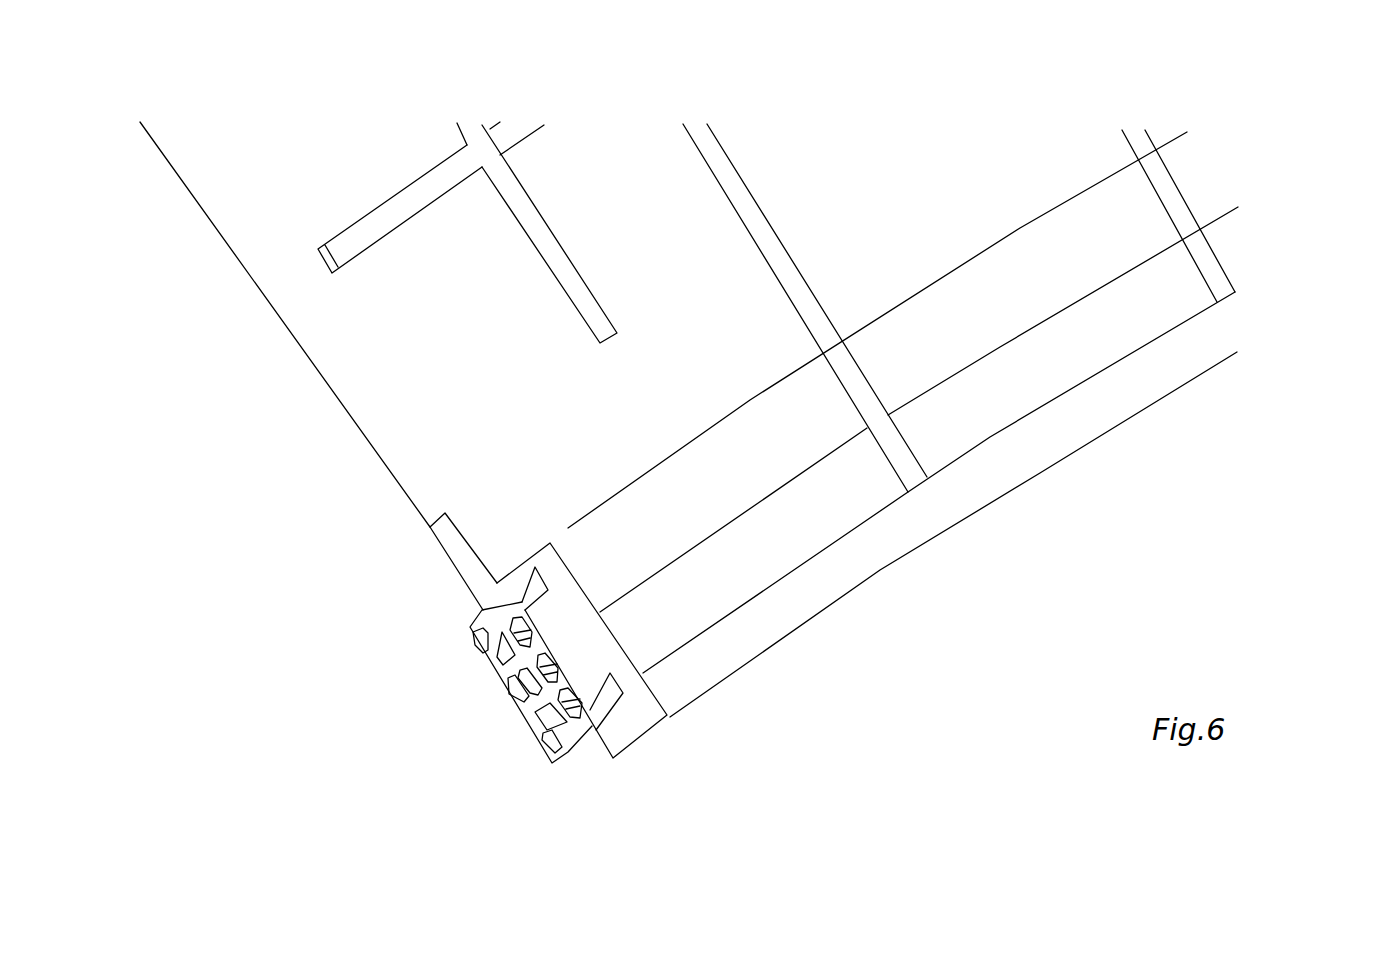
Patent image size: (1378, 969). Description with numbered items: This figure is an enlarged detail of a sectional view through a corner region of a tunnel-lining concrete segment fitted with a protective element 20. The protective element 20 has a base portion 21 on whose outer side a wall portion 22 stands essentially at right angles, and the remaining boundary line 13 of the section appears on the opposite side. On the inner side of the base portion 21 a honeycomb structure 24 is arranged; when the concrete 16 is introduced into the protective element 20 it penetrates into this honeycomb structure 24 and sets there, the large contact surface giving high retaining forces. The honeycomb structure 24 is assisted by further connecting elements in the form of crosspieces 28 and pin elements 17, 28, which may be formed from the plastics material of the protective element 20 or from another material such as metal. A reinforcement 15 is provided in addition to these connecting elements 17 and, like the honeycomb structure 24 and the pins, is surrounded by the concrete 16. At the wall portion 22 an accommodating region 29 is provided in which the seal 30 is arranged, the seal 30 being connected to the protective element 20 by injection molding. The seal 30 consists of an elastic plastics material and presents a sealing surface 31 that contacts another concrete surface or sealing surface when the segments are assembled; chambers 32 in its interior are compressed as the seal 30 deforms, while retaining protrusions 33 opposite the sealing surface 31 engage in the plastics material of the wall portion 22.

The wall 13 is at (293, 333).
The reinforcement 15 is at (520, 187).
The concrete 16 is at (437, 337).
The pin elements 17 is at (1006, 254).
The crosspieces 28 is at (722, 163).
The protective element 20 is at (903, 436).
The base portion 21 is at (1022, 487).
The wall portion 22 is at (453, 565).
The honeycomb structure 24 is at (952, 425).
The accommodating region 29 is at (397, 641).
The seal 30 is at (435, 726).
The sealing surface 31 is at (535, 695).
The chambers 32 is at (482, 640).
The retaining protrusions 33 is at (535, 587).